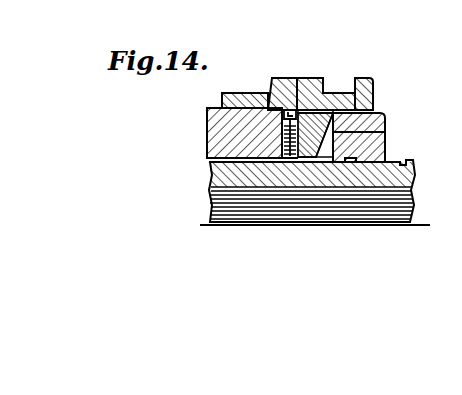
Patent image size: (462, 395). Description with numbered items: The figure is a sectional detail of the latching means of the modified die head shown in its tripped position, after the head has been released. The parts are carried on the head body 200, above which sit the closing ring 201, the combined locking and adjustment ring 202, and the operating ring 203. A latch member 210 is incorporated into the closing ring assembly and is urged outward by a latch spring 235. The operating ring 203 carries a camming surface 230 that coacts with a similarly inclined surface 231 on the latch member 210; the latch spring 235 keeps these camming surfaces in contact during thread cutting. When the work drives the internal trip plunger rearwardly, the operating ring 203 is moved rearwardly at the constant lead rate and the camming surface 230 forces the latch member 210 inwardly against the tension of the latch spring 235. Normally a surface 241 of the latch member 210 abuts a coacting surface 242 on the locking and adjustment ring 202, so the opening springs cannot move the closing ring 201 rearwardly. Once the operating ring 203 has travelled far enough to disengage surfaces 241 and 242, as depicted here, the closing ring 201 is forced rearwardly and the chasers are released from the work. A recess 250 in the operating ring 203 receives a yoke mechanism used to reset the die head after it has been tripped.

The head body 200 is at (382, 178).
The closing ring 201 is at (208, 137).
The combined locking and adjustment ring 202 is at (372, 142).
The operating ring 203 is at (307, 83).
The latch member 210 is at (304, 133).
The camming surface 230 is at (297, 108).
The inclined surface 231 is at (262, 93).
The latch spring 235 is at (300, 145).
The surface of latch member 241 is at (384, 122).
The coacting surface 242 is at (330, 111).
The recess 250 is at (342, 85).